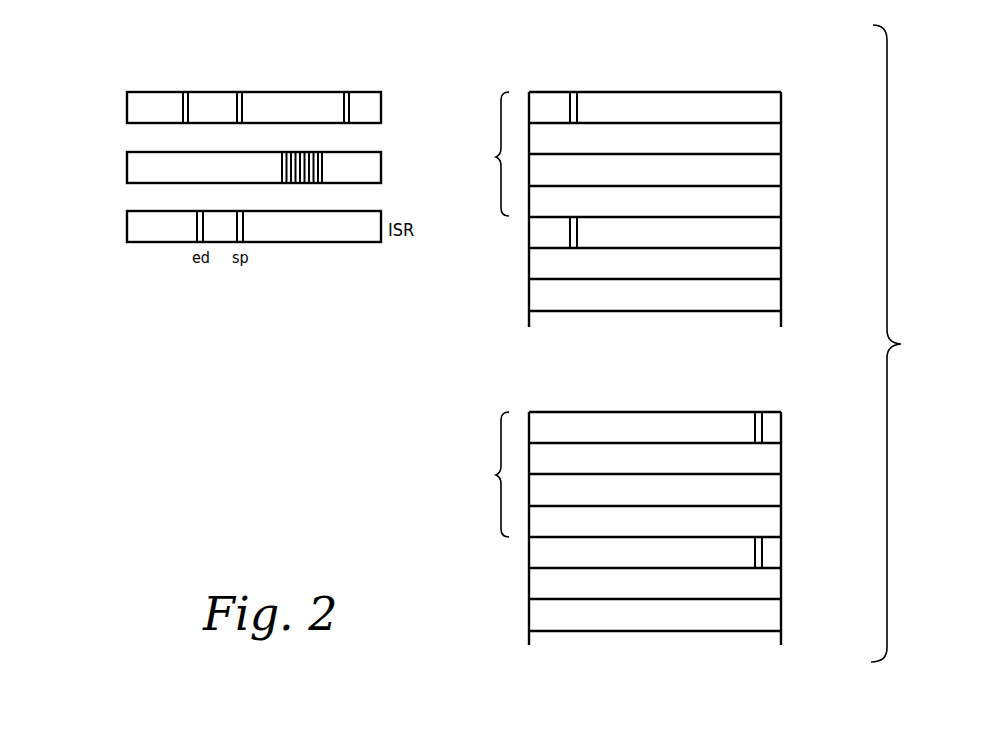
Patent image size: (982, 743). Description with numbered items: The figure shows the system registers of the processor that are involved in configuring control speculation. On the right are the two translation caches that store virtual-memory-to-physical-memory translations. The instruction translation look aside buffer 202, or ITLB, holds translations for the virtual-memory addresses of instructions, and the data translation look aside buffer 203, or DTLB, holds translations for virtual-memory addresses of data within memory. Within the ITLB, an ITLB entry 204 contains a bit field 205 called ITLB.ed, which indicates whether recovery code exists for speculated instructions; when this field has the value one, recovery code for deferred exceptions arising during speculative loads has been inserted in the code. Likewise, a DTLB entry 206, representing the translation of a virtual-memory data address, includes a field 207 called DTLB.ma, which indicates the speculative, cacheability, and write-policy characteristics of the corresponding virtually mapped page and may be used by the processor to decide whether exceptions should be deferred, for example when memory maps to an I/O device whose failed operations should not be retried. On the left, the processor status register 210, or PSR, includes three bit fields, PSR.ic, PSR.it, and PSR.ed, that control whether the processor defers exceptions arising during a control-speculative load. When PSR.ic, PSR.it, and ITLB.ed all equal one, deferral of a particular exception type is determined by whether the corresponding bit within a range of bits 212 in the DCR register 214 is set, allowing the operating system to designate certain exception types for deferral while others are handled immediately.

The instruction translation look aside buffer 202 is at (650, 176).
The data translation look aside buffer 203 is at (649, 494).
The ITLB entry 204 is at (496, 157).
The bit field ITLB.ed 205 is at (572, 67).
The DTLB entry 206 is at (496, 475).
The field DTLB.ma 207 is at (758, 388).
The processor status register 210 is at (127, 105).
The range of bits 212 is at (313, 183).
The DCR register 214 is at (127, 167).